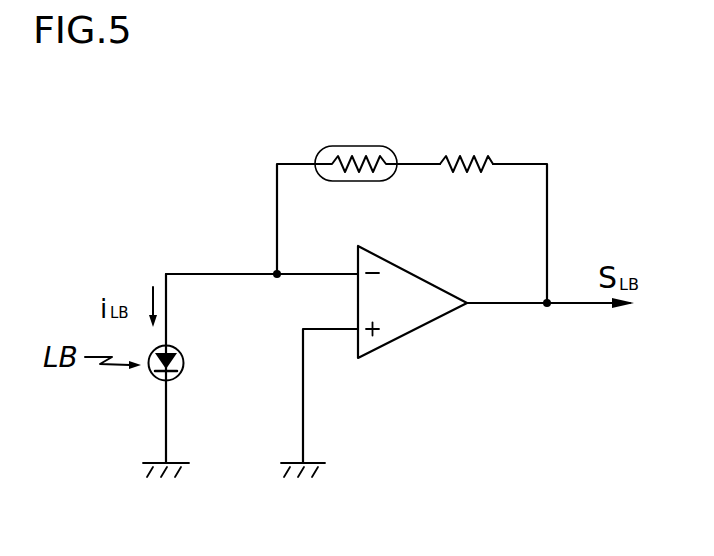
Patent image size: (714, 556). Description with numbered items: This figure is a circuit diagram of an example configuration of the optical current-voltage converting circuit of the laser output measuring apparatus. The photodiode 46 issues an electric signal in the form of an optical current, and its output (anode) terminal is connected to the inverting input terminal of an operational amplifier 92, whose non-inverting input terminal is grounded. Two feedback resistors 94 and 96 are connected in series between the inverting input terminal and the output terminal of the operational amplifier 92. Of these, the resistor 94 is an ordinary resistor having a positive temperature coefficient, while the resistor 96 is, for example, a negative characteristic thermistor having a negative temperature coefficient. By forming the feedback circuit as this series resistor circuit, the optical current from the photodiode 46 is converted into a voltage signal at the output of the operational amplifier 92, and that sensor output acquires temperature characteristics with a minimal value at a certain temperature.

The feedback resistor 96 is at (357, 146).
The feedback resistor 94 is at (472, 158).
The operational amplifier 92 is at (420, 327).
The photodiode 46 is at (183, 368).